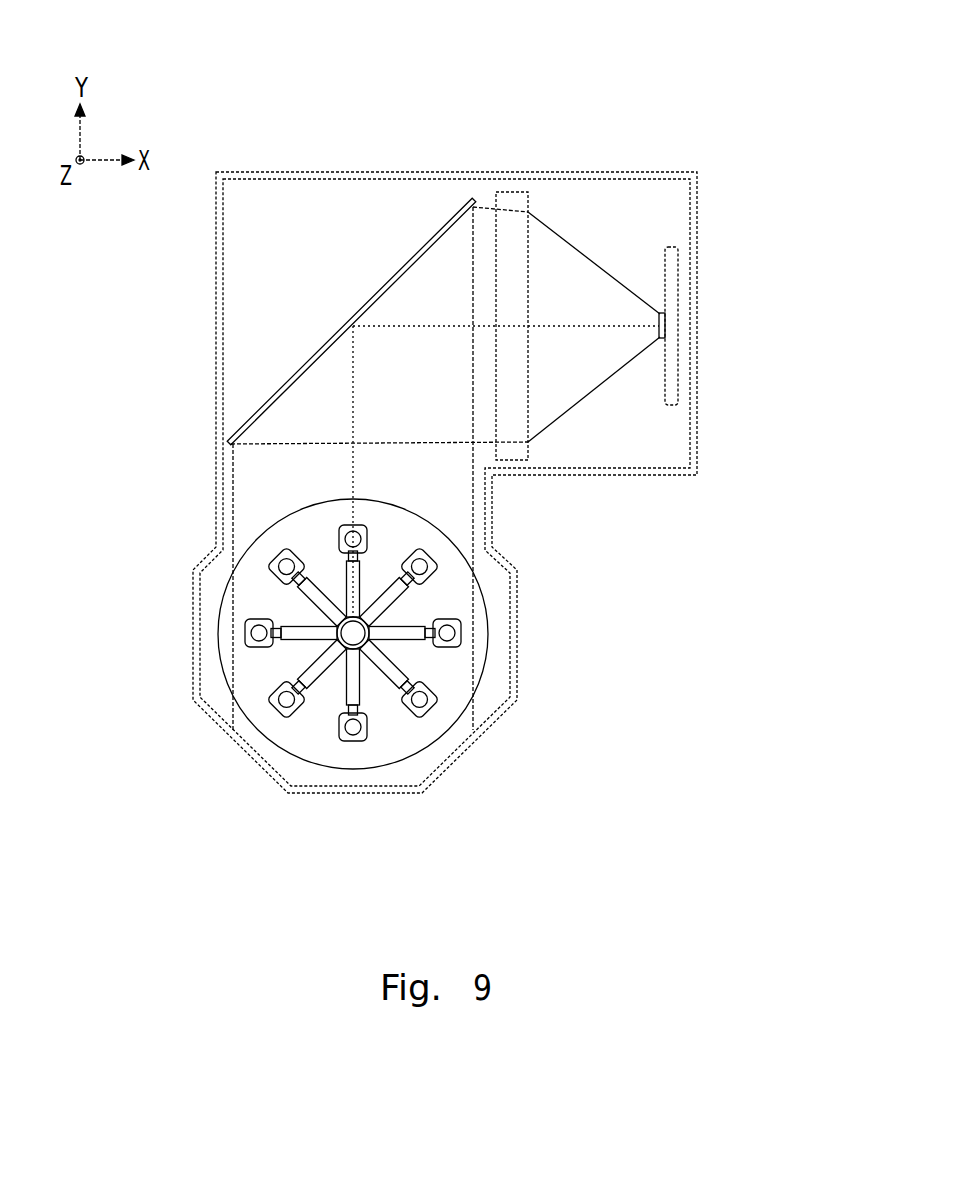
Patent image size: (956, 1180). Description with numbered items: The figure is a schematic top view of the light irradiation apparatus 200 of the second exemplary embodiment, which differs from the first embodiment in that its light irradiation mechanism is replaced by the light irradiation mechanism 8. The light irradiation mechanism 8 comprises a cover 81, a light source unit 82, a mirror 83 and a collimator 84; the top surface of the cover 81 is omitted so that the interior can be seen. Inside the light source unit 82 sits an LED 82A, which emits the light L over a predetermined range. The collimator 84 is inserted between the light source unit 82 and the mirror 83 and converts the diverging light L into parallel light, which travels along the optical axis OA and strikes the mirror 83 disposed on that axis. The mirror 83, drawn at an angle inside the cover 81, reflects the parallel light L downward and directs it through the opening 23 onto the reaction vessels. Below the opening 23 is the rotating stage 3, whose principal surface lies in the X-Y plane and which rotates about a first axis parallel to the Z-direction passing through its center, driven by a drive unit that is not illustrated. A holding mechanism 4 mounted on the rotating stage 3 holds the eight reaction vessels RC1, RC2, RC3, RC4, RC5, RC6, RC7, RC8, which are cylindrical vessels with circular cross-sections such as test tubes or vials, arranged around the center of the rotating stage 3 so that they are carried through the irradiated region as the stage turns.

The light irradiation apparatus 200 is at (718, 129).
The light irradiation mechanism 8 is at (687, 80).
The cover 81 is at (278, 172).
The light source unit 82 is at (673, 246).
The LED 82A is at (657, 331).
The mirror 83 is at (437, 233).
The collimator 84 is at (518, 191).
The light L is at (578, 411).
The optical axis OA is at (536, 326).
The opening 23 is at (285, 494).
The rotating stage 3 is at (428, 748).
The holding mechanism 4 is at (270, 672).
The reaction vessel RC1 is at (352, 558).
The reaction vessel RC2 is at (396, 578).
The reaction vessel RC3 is at (418, 647).
The reaction vessel RC4 is at (396, 691).
The reaction vessel RC5 is at (352, 711).
The reaction vessel RC6 is at (309, 691).
The reaction vessel RC7 is at (288, 621).
The reaction vessel RC8 is at (309, 578).